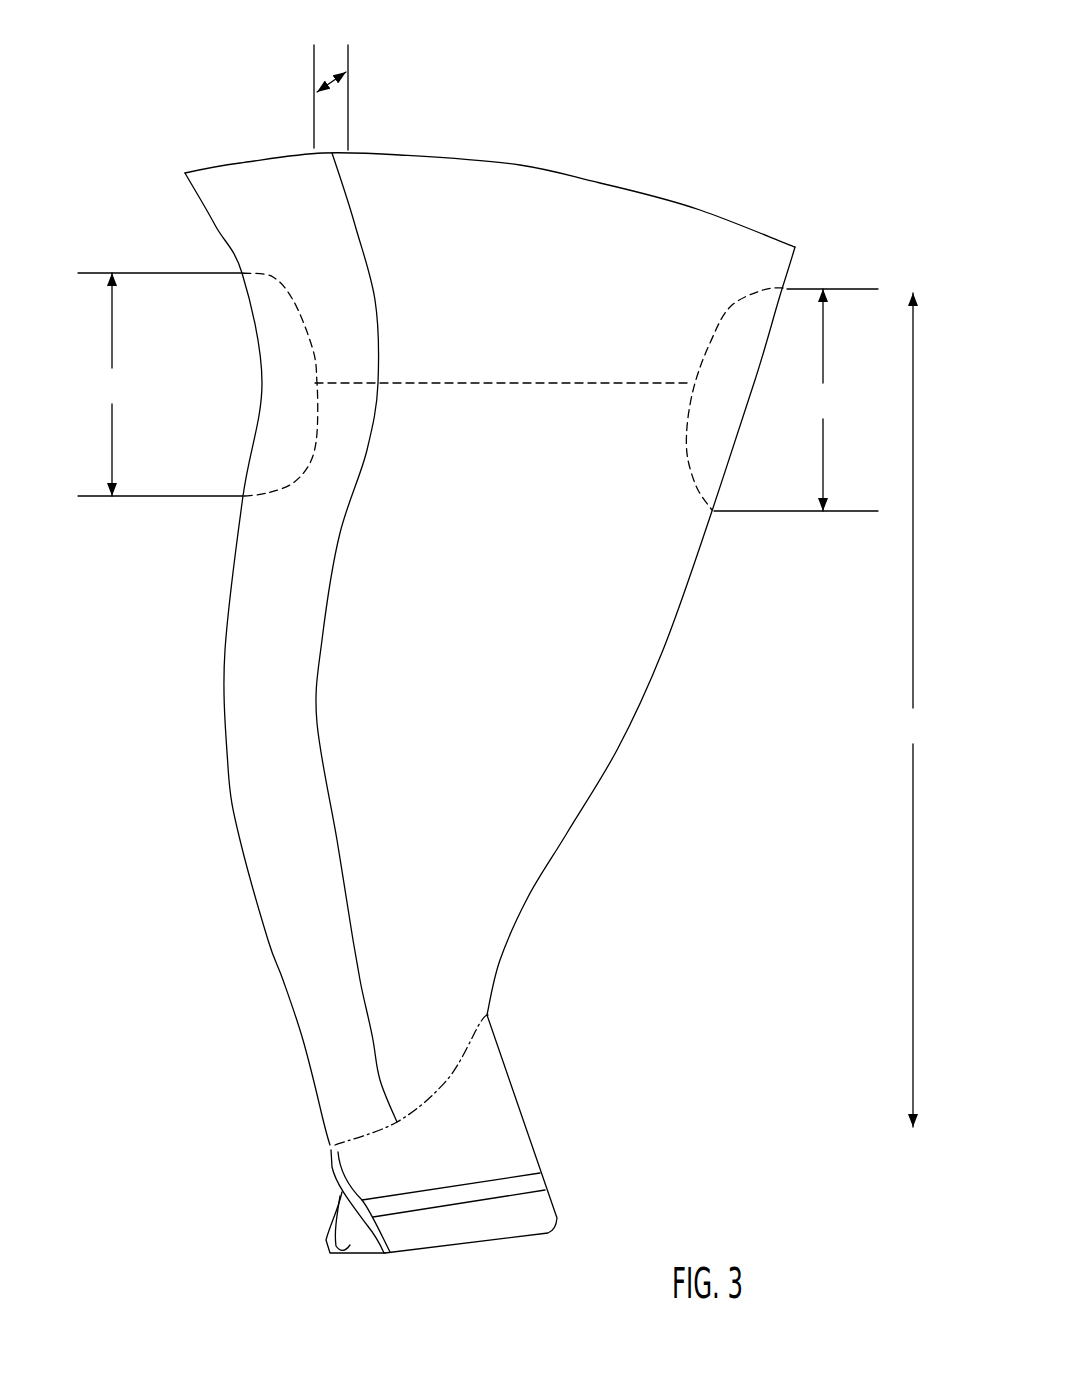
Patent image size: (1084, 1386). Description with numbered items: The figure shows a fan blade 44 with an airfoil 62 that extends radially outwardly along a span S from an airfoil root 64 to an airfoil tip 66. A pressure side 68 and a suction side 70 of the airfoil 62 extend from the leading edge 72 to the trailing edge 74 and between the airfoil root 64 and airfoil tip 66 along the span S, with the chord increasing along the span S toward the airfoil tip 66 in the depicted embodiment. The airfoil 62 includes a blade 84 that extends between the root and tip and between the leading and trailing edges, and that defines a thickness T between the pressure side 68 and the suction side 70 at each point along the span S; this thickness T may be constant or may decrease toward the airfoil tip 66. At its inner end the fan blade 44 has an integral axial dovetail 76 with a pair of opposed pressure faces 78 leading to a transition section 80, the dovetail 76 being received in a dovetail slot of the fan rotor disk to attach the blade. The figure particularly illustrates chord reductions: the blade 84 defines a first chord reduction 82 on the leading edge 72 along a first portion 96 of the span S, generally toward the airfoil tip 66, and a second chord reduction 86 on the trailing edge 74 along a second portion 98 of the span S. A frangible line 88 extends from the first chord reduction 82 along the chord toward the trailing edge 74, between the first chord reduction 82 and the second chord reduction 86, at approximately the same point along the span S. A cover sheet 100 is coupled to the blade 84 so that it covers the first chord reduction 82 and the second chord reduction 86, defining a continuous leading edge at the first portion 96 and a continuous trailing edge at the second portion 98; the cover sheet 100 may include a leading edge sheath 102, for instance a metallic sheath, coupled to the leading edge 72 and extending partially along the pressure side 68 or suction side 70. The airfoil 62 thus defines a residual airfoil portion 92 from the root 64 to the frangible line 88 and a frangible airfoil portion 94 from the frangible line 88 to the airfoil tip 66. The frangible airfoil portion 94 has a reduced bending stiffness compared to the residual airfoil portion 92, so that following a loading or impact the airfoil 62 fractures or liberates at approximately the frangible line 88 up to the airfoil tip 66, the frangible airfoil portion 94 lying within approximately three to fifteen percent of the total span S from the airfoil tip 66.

The fan blade 44 is at (646, 146).
The airfoil 62 is at (292, 903).
The airfoil root 64 is at (452, 1070).
The airfoil tip 66 is at (520, 165).
The pressure side 68 is at (431, 622).
The suction side 70 is at (335, 608).
The leading edge 72 is at (223, 766).
The trailing edge 74 is at (672, 647).
The axial dovetail 76 is at (352, 1242).
The pressure faces 78 is at (529, 1208).
The transition section 80 is at (493, 1137).
The first chord reduction 82 is at (230, 267).
The blade 84 is at (517, 867).
The second chord reduction 86 is at (805, 278).
The frangible line 88 is at (447, 380).
The residual airfoil portion 92 is at (603, 728).
The frangible airfoil portion 94 is at (725, 235).
The first portion of the span 96 is at (160, 384).
The second portion of the span 98 is at (796, 400).
The cover sheet 100 is at (535, 787).
The leading edge sheath 102 is at (328, 1013).
The span S is at (912, 710).
The thickness T is at (320, 84).